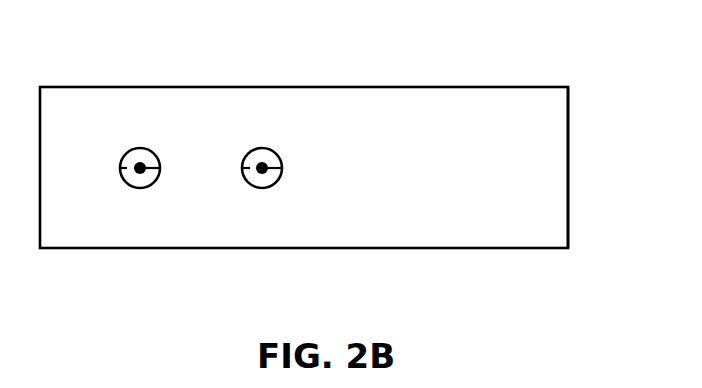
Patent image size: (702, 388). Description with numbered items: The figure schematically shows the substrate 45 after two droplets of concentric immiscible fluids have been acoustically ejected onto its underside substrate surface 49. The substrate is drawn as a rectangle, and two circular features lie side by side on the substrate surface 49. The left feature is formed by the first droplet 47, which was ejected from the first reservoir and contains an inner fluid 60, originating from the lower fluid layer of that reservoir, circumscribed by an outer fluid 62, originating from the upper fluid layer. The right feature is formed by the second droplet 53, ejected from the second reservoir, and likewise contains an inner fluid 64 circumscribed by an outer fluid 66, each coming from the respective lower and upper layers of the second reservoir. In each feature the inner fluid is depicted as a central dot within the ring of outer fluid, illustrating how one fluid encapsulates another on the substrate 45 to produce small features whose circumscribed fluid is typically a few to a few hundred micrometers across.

The substrate 45 is at (382, 87).
The substrate surface 49 is at (558, 175).
The first droplet 47 is at (140, 188).
The second droplet 53 is at (262, 188).
The inner fluid 60 is at (160, 168).
The outer fluid 66 is at (282, 168).
The outer fluid 62 is at (120, 168).
The inner fluid 64 is at (242, 168).